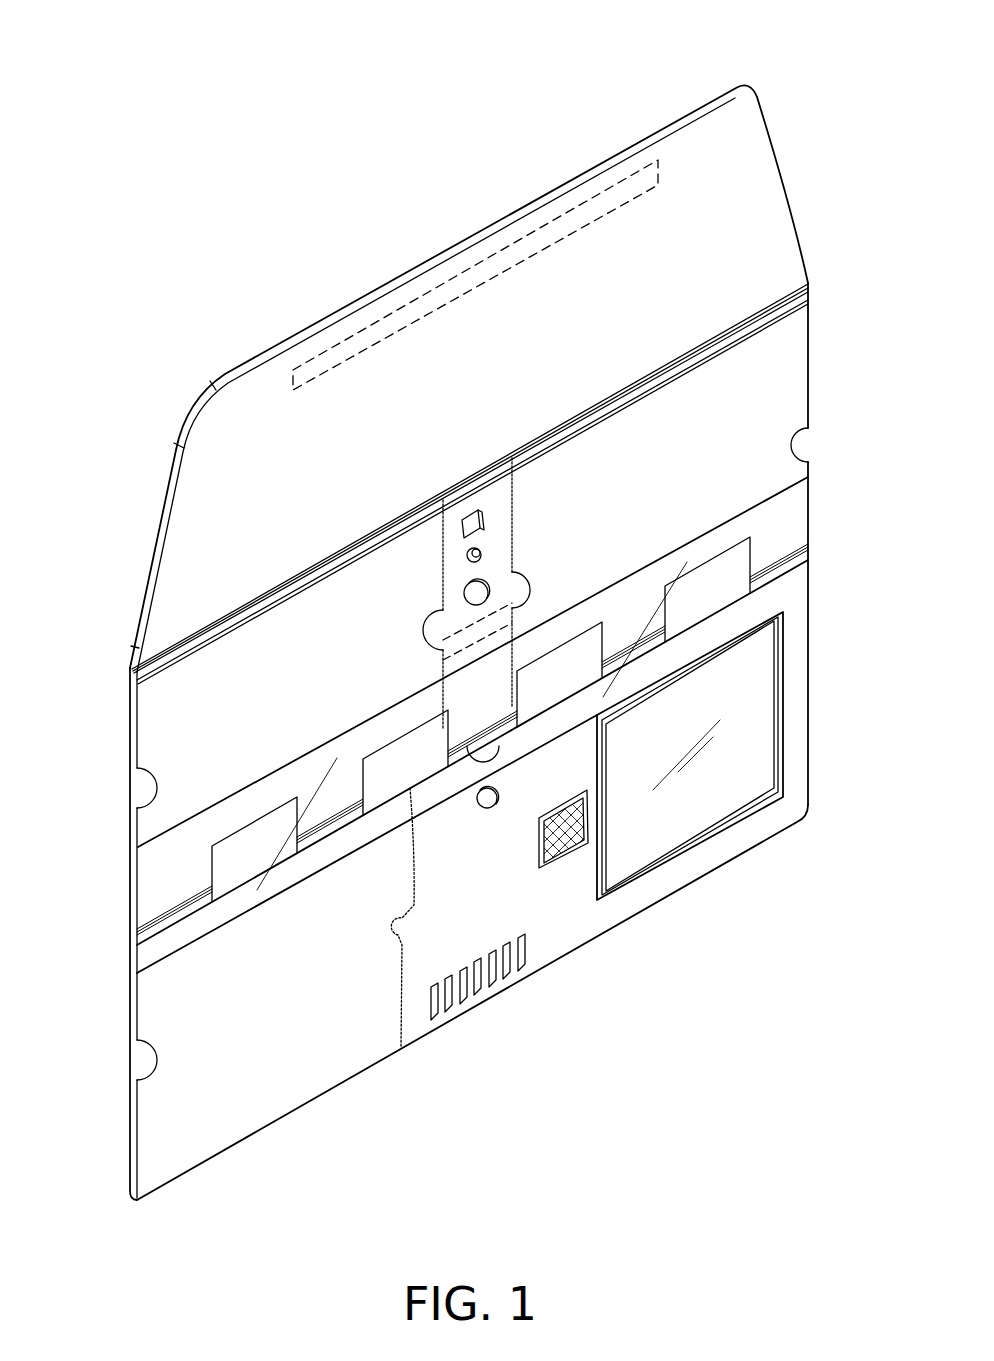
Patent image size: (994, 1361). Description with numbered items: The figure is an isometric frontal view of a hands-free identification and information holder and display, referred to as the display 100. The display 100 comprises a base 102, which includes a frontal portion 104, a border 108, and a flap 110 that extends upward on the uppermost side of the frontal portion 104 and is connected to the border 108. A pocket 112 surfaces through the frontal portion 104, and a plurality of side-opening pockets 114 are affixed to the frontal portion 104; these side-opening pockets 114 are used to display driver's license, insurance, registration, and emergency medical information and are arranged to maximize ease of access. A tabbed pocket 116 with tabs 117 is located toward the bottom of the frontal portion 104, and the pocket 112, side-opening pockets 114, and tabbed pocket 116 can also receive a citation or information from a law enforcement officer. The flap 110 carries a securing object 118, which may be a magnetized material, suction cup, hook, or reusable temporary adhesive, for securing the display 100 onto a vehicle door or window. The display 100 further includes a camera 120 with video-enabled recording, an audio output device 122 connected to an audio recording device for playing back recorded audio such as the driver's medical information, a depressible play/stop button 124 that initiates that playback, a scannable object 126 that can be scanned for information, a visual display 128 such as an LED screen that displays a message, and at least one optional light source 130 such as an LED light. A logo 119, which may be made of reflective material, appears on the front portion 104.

The display 100 is at (806, 38).
The base 102 is at (308, 1112).
The frontal portion 104 is at (758, 370).
The border 108 is at (131, 1120).
The flap 110 is at (245, 440).
The pocket 112 is at (756, 302).
The side-opening pockets 114 is at (690, 446).
The tabbed pocket 116 is at (778, 580).
The tabs 117 is at (728, 565).
The securing object 118 is at (385, 325).
The logo 119 is at (718, 862).
The camera 120 is at (468, 553).
The audio output device 122 is at (570, 857).
The depressible play/stop button 124 is at (462, 522).
The scannable object 126 is at (487, 992).
The visual display 128 is at (757, 690).
The light source 130 is at (465, 598).